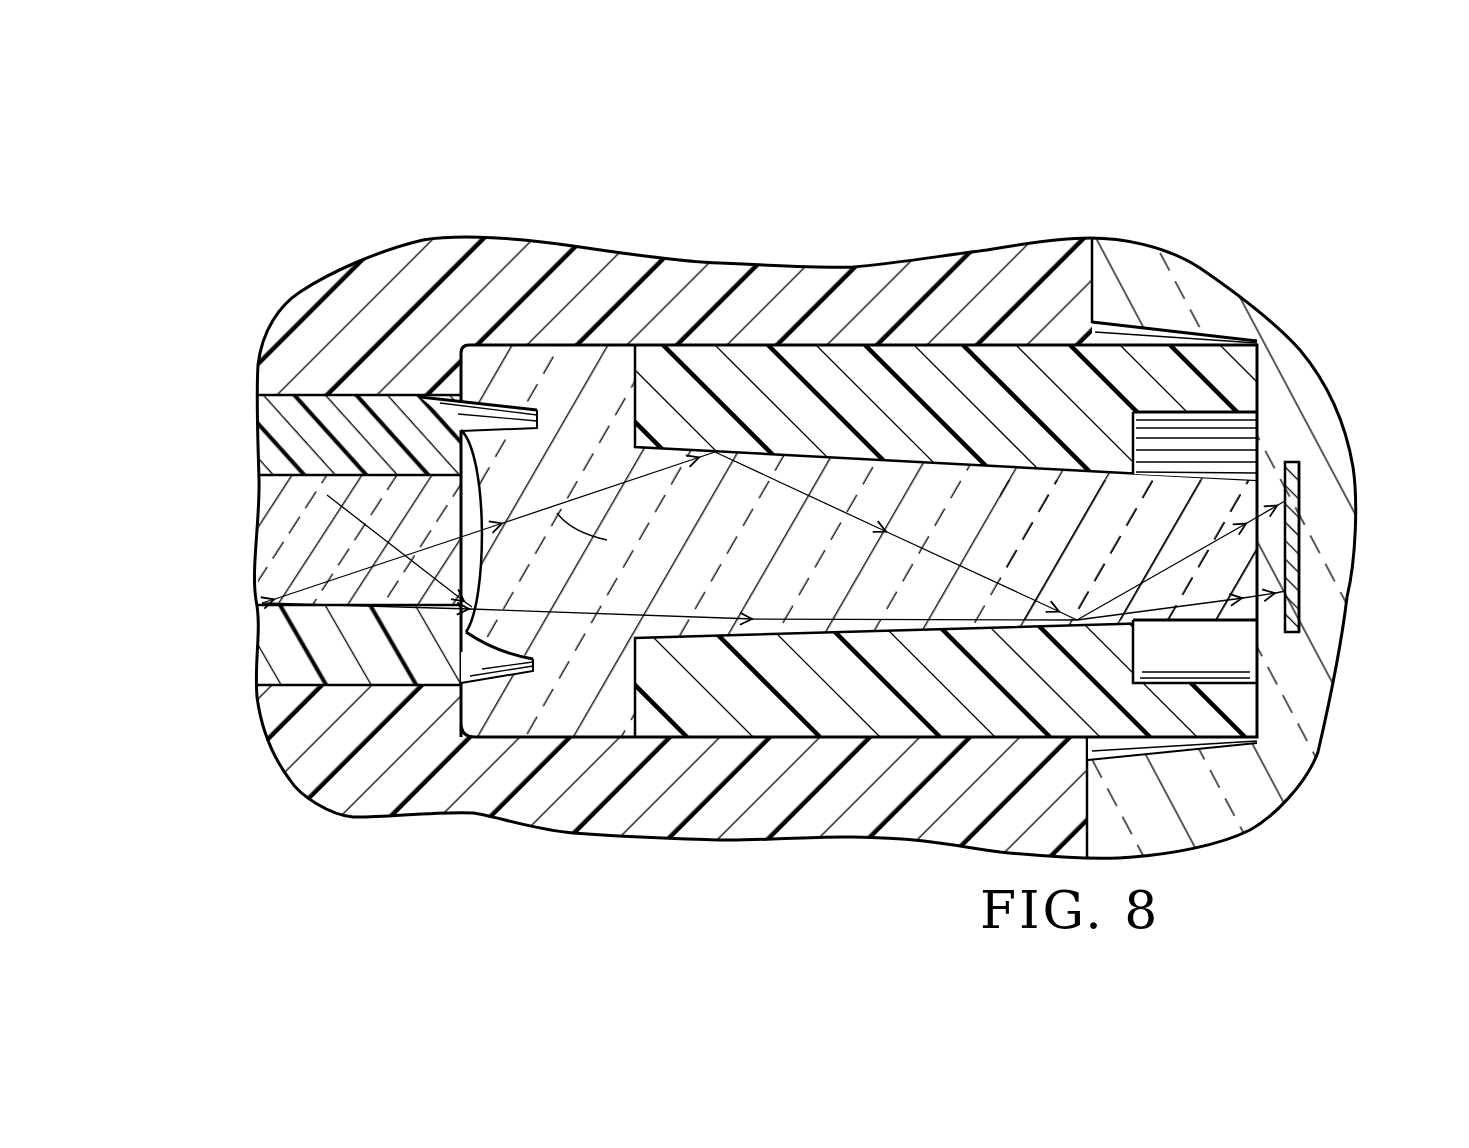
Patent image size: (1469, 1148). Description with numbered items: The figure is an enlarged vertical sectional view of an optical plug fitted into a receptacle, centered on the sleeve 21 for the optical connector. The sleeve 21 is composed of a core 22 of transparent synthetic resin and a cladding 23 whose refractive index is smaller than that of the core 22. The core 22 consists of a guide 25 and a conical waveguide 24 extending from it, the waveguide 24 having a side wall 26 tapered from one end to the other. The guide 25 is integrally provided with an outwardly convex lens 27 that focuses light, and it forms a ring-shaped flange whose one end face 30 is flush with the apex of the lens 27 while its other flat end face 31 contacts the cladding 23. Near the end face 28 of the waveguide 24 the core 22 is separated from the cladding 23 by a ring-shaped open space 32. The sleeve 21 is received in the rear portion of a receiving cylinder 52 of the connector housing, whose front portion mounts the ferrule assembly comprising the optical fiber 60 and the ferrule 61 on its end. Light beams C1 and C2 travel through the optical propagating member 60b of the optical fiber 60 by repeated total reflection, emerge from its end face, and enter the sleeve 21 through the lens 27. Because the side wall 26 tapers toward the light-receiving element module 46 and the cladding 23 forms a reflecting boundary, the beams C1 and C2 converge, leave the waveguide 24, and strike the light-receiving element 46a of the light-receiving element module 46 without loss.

The sleeve 21 is at (690, 183).
The core 22 is at (632, 330).
The cladding 23 is at (943, 342).
The waveguide 24 is at (1113, 493).
The guide 25 is at (555, 717).
The side wall 26 is at (1045, 375).
The lens 27 is at (487, 630).
The end face 28 is at (1272, 468).
The end face 30 is at (450, 373).
The end face 31 is at (640, 720).
The open space 32 is at (1187, 437).
The light-receiving element module 46 is at (1213, 813).
The light-receiving element 46a is at (1299, 570).
The receiving cylinder 52 is at (303, 342).
The optical fiber 60 is at (262, 492).
The optical propagating member 60b is at (280, 540).
The ferrule 61 is at (270, 665).
The light beam C1 is at (669, 536).
The light beam C2 is at (882, 622).